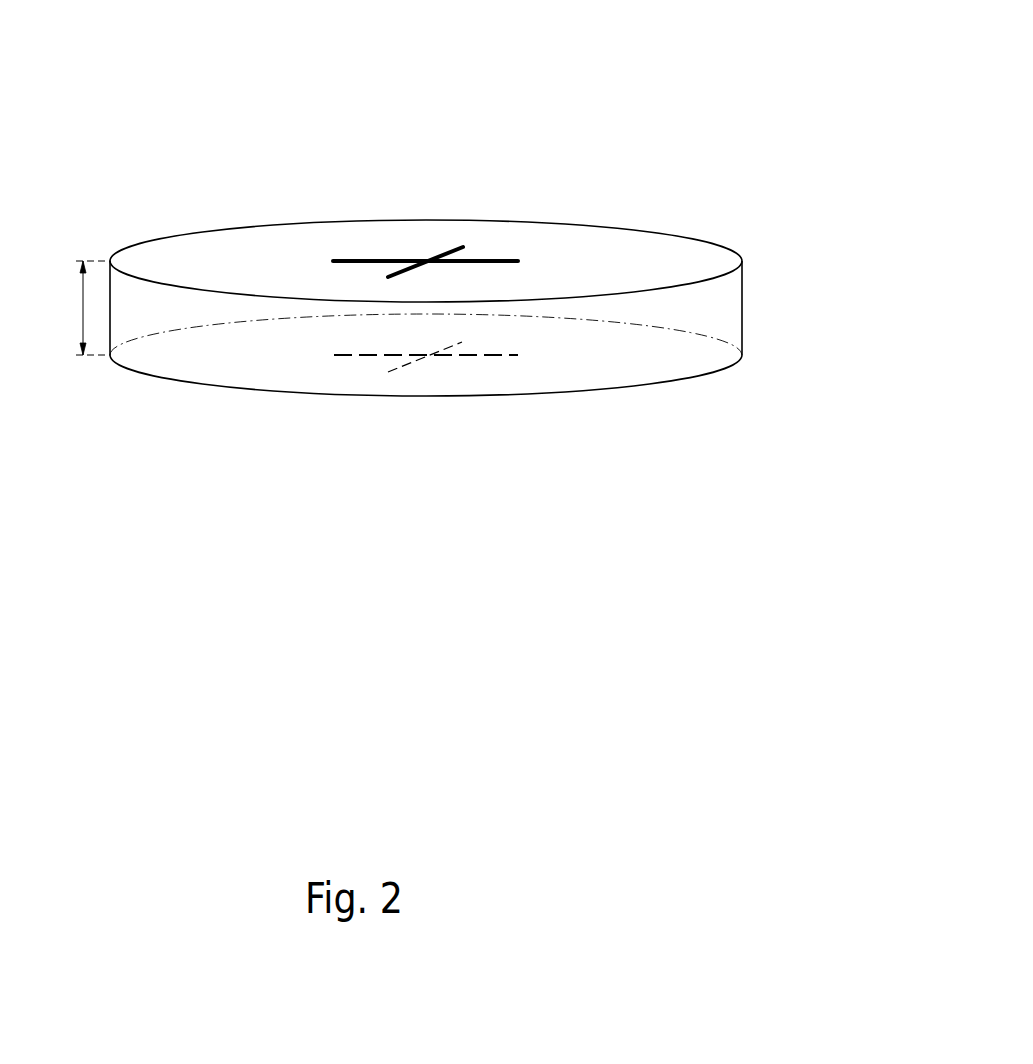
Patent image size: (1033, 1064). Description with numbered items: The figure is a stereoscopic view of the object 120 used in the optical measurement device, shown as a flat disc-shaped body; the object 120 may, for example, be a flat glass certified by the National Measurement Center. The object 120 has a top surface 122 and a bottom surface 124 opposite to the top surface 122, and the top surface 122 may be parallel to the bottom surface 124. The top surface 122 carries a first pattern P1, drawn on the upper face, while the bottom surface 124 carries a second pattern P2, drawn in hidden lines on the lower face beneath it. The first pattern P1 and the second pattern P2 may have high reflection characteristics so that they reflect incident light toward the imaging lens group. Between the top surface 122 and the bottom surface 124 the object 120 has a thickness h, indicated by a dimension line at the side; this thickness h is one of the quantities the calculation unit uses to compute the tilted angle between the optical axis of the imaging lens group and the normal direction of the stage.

The object 120 is at (434, 237).
The top surface 122 is at (691, 245).
The bottom surface 124 is at (691, 338).
The first pattern P1 is at (490, 258).
The second pattern P2 is at (492, 357).
The thickness h is at (86, 308).